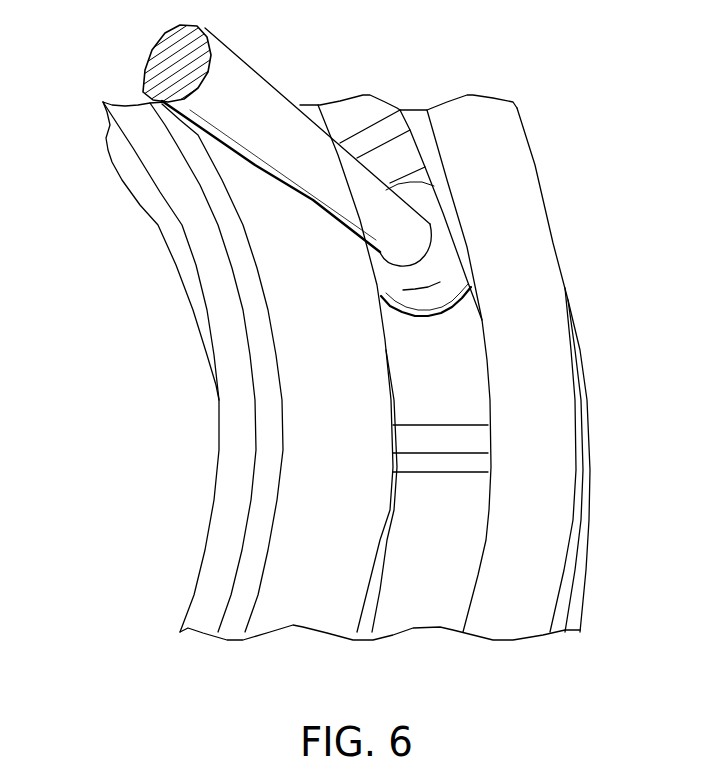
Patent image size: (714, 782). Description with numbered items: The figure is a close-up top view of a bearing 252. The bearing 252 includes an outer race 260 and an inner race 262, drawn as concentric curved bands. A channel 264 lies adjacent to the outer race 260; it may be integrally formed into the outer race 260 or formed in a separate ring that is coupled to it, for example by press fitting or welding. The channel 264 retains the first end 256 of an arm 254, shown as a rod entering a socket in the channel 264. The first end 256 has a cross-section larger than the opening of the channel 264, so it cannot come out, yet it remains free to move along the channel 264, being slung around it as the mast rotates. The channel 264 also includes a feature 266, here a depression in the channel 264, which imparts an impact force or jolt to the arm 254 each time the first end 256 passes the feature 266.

The bearing 252 is at (345, 399).
The arm 254 is at (245, 67).
The first end 256 is at (443, 270).
The outer race 260 is at (324, 610).
The inner race 262 is at (224, 514).
The channel 264 is at (499, 407).
The feature 266 is at (453, 392).